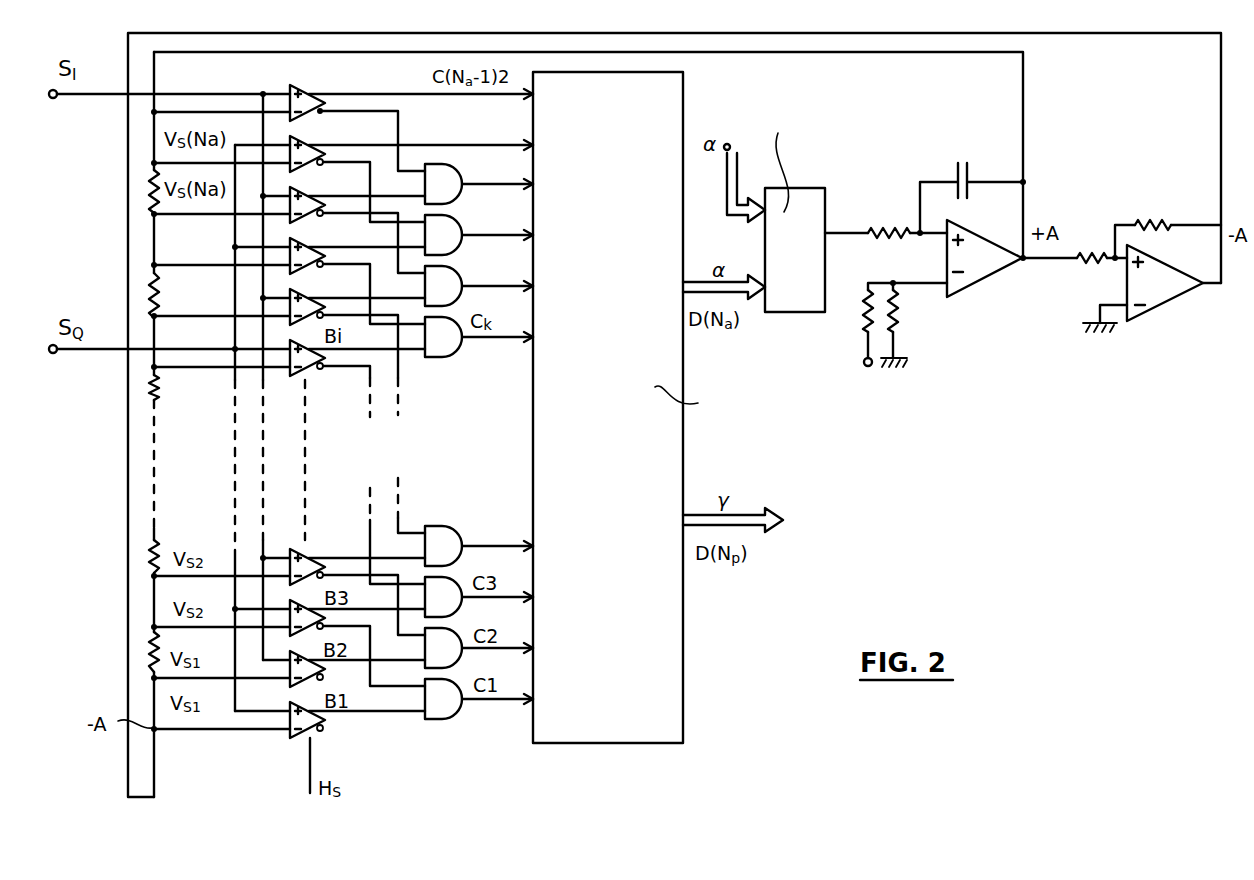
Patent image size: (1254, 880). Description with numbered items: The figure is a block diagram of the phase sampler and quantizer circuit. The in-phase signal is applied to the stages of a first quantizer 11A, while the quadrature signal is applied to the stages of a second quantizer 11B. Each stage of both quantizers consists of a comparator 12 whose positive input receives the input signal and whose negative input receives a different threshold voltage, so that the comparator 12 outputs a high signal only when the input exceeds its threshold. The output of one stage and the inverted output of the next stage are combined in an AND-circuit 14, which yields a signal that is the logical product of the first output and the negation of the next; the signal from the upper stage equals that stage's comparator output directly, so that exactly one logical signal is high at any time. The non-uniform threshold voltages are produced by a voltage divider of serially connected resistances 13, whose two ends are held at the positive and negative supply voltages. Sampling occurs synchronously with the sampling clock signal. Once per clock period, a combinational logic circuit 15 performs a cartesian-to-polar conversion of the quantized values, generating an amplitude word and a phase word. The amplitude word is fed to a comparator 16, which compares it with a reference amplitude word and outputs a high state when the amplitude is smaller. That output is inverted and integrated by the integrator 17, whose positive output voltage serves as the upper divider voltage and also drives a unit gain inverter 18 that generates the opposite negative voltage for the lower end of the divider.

The first quantizer 11A is at (320, 85).
The second quantizer 11B is at (289, 374).
The comparator 12 is at (310, 370).
The resistances 13 is at (150, 192).
The AND-circuit 14 is at (448, 188).
The combinational logic circuit 15 is at (675, 605).
The comparator 16 is at (811, 198).
The integrator 17 is at (975, 265).
The unit gain inverter 18 is at (1163, 290).